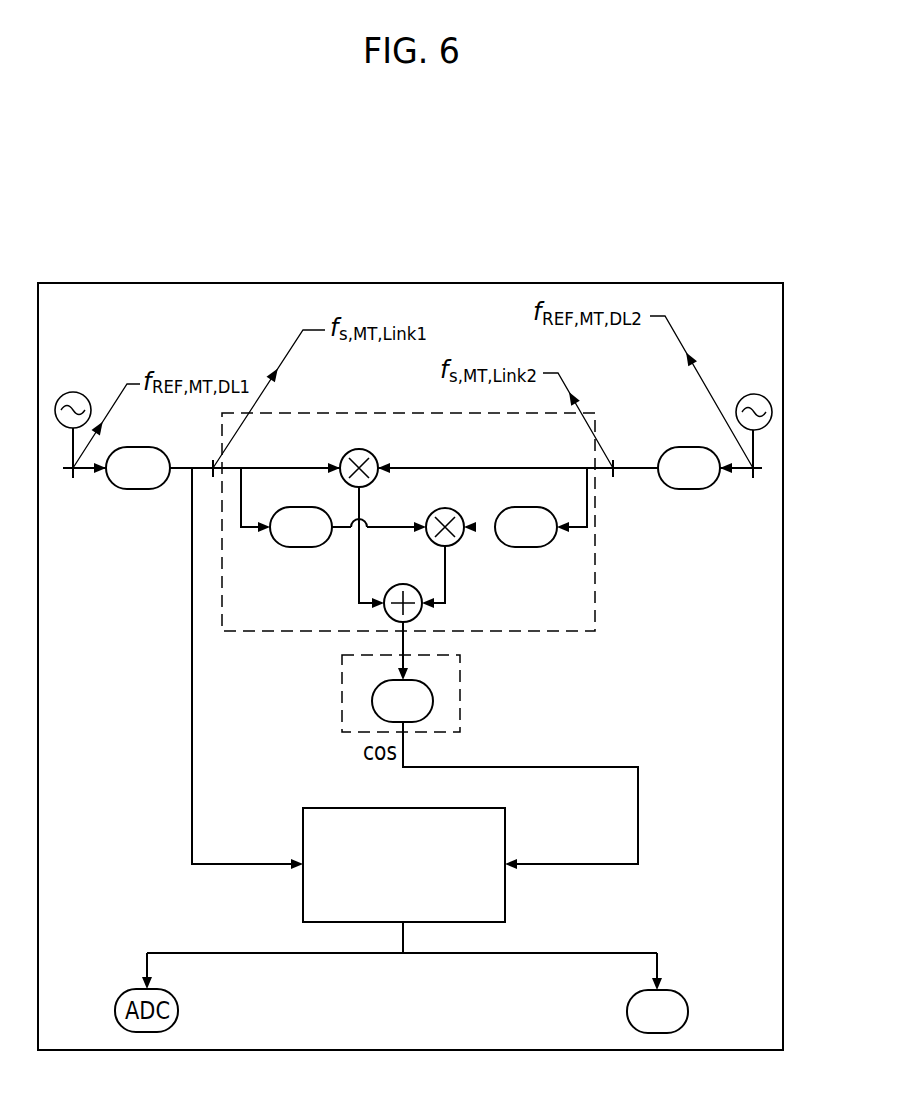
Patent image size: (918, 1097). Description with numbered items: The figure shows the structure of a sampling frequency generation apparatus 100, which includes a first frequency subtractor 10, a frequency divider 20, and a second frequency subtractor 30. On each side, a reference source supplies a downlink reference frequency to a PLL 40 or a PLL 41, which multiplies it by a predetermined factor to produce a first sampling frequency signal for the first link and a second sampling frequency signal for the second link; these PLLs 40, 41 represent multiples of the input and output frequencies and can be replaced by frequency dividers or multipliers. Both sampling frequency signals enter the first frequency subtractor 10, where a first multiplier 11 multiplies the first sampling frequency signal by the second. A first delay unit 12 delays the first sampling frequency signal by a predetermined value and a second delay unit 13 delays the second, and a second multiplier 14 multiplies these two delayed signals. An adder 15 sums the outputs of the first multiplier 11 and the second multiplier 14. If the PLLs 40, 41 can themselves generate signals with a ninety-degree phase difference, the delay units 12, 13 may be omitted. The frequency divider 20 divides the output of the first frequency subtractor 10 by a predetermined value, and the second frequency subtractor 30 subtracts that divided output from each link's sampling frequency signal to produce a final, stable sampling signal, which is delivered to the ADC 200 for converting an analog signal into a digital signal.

The sampling frequency generation apparatus 100 is at (520, 282).
The first frequency subtractor 10 is at (596, 585).
The first multiplier 11 is at (373, 451).
The first delay unit 12 is at (301, 548).
The second delay unit 13 is at (526, 548).
The second multiplier 14 is at (456, 513).
The adder 15 is at (403, 584).
The frequency divider 20 is at (461, 693).
The second frequency subtractor 30 is at (330, 808).
The PLL 40 is at (149, 447).
The PLL 41 is at (690, 447).
The ADC 200 is at (689, 1011).